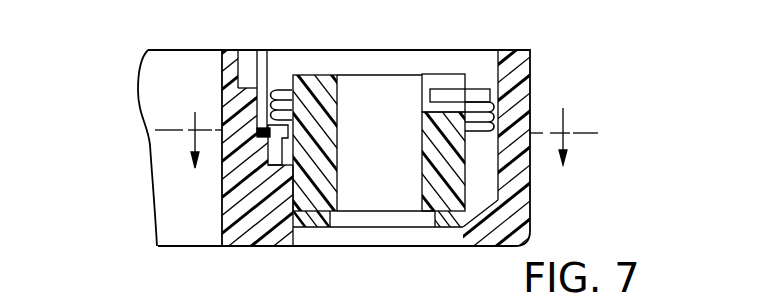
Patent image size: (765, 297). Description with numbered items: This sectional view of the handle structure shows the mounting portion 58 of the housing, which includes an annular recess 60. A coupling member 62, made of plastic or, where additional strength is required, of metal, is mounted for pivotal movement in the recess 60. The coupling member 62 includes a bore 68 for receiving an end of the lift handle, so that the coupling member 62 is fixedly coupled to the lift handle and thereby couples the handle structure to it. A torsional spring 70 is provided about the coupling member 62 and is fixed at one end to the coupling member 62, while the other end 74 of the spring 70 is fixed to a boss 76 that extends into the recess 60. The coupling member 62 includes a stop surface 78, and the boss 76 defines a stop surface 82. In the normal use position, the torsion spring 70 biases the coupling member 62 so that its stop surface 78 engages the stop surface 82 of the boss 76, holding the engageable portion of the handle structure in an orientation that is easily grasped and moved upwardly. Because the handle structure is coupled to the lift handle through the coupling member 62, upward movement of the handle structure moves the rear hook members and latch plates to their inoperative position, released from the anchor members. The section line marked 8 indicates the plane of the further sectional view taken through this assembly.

The mounting portion 58 is at (530, 83).
The annular recess 60 is at (497, 66).
The coupling member 62 is at (318, 83).
The bore 68 is at (420, 88).
The torsional spring 70 is at (274, 86).
The other end of the spring 74 is at (224, 112).
The boss 76 is at (288, 150).
The stop surface 78 is at (293, 296).
The stop surface 82 is at (381, 248).
The section line 8 is at (378, 143).